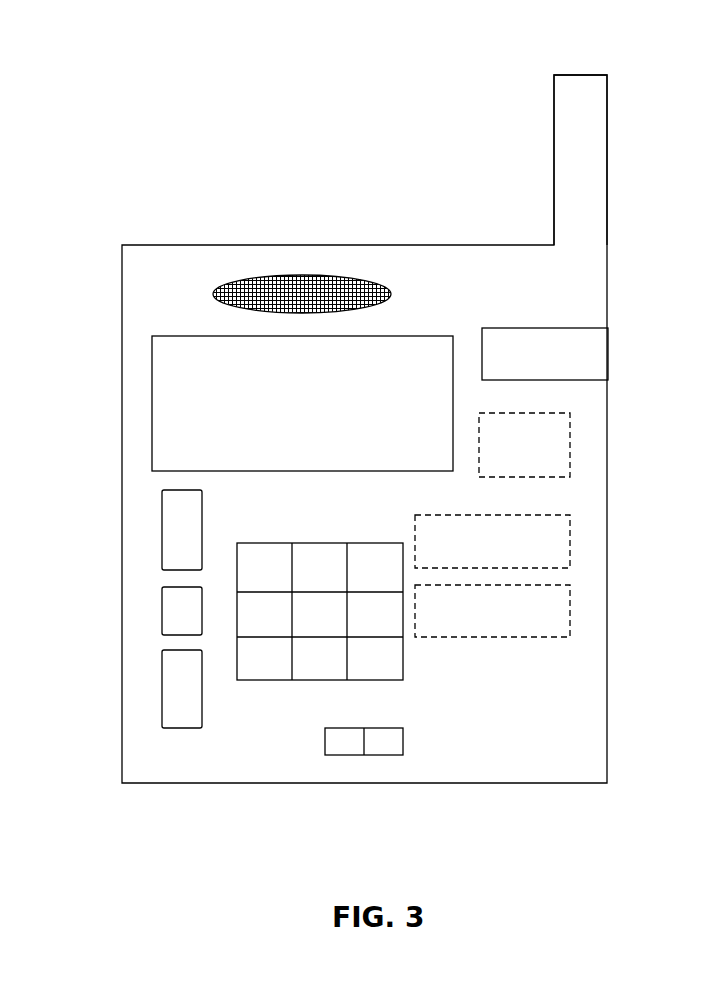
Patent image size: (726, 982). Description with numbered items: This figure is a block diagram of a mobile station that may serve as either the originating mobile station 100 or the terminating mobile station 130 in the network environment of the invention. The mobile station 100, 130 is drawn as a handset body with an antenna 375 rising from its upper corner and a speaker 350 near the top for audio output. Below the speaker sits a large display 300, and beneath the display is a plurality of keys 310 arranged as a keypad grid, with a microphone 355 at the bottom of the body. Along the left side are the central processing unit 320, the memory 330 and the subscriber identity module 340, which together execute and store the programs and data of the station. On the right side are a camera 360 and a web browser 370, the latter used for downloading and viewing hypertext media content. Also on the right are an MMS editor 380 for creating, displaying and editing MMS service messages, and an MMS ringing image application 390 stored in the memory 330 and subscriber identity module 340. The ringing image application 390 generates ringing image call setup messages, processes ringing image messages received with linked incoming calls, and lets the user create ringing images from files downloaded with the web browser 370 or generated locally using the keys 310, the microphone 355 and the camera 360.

The originating mobile station 100 is at (364, 429).
The terminating mobile station 130 is at (364, 429).
The display 300 is at (150, 404).
The keys 310 is at (325, 543).
The central processing unit 320 is at (162, 531).
The memory 330 is at (162, 611).
The subscriber identity module 340 is at (162, 681).
The speaker 350 is at (297, 273).
The microphone 355 is at (377, 757).
The camera 360 is at (605, 351).
The web browser 370 is at (572, 437).
The antenna 375 is at (554, 130).
The MMS editor 380 is at (572, 541).
The MMS ringing image application 390 is at (572, 610).